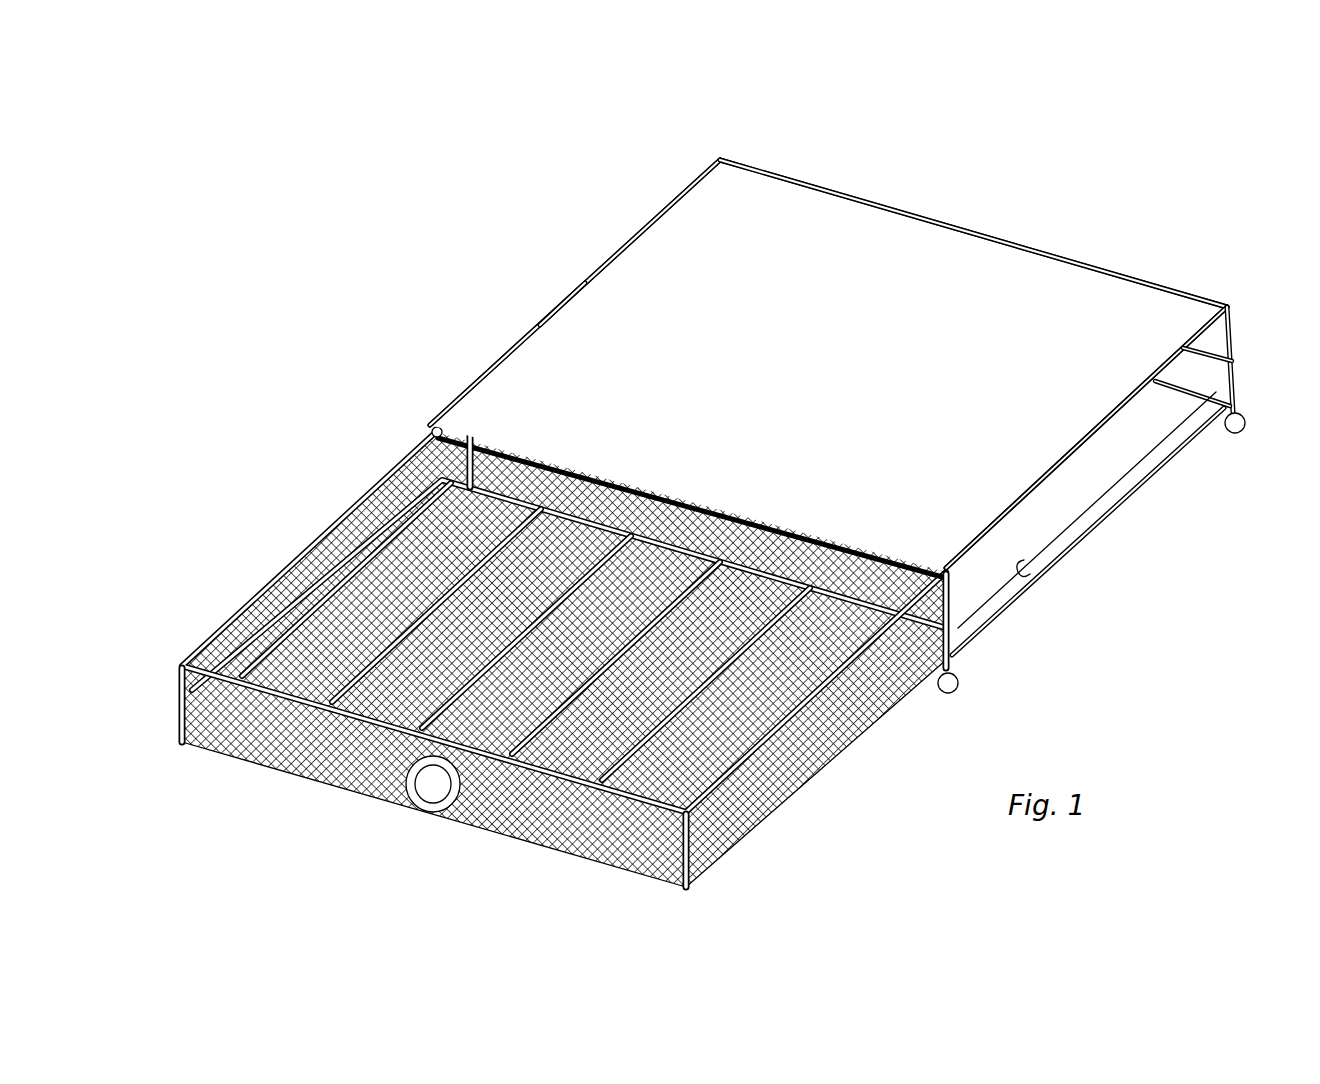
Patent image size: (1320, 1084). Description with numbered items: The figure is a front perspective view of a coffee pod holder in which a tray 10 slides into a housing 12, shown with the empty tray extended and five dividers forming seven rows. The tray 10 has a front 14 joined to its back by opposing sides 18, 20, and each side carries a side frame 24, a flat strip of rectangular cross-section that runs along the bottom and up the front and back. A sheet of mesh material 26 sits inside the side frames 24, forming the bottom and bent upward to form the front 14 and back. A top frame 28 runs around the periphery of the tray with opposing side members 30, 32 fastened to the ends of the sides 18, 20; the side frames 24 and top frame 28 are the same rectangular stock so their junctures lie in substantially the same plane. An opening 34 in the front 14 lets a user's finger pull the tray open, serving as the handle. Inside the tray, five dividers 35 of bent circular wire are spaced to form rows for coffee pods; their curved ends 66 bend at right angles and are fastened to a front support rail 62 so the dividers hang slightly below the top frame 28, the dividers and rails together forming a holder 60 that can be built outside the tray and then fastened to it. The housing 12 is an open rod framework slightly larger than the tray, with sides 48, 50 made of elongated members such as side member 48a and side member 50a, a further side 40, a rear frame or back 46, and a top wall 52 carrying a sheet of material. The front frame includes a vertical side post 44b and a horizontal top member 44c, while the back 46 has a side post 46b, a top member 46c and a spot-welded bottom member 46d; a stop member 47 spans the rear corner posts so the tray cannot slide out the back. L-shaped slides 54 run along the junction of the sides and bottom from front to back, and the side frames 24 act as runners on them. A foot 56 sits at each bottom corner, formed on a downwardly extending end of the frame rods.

The tray 10 is at (689, 529).
The housing 12 is at (839, 405).
The front 14 is at (562, 824).
The side 18 is at (615, 603).
The side 20 is at (283, 596).
The side frame 24 is at (182, 693).
The mesh material 26 is at (347, 540).
The top frame 28 is at (512, 352).
The side member 30 is at (893, 705).
The side member 32 is at (322, 552).
The opening 34 is at (433, 790).
The divider 35 is at (318, 712).
The side 40 is at (428, 436).
The side post 44b is at (952, 662).
The top member 44c is at (470, 430).
The back 46 is at (839, 362).
The side post 46b is at (1242, 335).
The top member 46c is at (828, 191).
The bottom member 46d is at (1184, 405).
The stop member 47 is at (1206, 352).
The side 48 is at (1094, 488).
The side member 48a is at (1062, 524).
The side 50 is at (572, 266).
The side member 50a is at (560, 305).
The top wall 52 is at (905, 388).
The slide 54 is at (1028, 574).
The foot 56 is at (958, 688).
The holder 60 is at (405, 735).
The support rail 62 is at (522, 752).
The end 66 is at (243, 688).